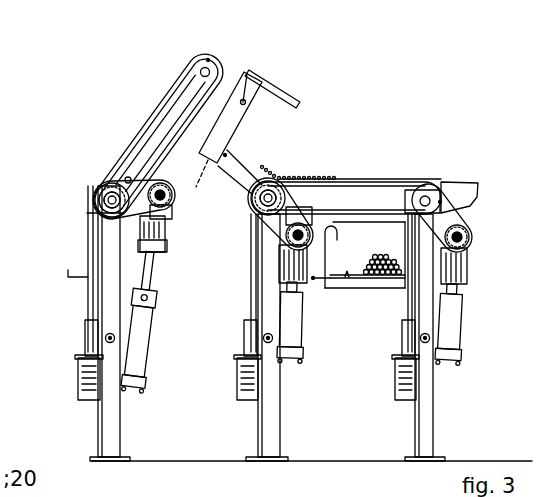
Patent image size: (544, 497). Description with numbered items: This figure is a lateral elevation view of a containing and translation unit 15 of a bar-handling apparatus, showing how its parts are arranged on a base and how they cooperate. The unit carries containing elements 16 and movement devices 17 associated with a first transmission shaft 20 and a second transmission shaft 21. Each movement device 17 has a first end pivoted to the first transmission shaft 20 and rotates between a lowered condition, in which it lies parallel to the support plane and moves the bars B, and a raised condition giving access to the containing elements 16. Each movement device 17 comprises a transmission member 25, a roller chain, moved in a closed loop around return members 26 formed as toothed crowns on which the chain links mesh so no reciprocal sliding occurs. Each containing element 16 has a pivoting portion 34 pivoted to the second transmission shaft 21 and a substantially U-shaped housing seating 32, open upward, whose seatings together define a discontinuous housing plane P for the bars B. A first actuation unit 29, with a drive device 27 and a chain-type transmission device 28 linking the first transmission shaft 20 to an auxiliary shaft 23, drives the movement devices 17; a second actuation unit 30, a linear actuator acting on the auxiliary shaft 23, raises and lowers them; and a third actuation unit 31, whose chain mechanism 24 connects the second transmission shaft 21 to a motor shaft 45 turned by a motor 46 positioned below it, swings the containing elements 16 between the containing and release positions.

The containing and translation unit 15 is at (200, 432).
The containing element 16 is at (280, 83).
The movement device 17 is at (133, 144).
The first transmission shaft 20 is at (108, 200).
The second transmission shaft 21 is at (190, 199).
The auxiliary shaft 23 is at (163, 190).
The chain mechanism 24 is at (100, 290).
The transmission member 25 is at (160, 123).
The return member 26 is at (207, 59).
The drive device 27 is at (152, 240).
The transmission device 28 is at (110, 217).
The first actuation unit 29 is at (127, 178).
The second actuation unit 30 is at (137, 394).
The third actuation unit 31 is at (90, 298).
The housing seating 32 is at (243, 99).
The pivoting portion 34 is at (225, 157).
The motor shaft 45 is at (90, 344).
The motor 46 is at (82, 396).
The housing plane P is at (243, 98).
The bars B is at (304, 177).